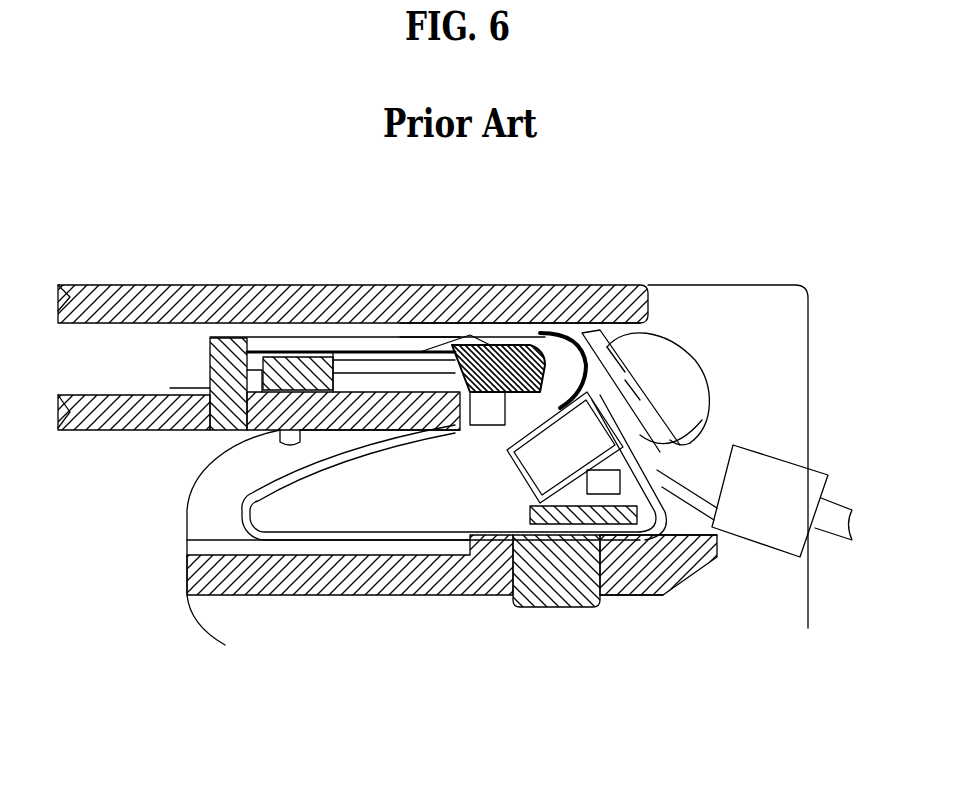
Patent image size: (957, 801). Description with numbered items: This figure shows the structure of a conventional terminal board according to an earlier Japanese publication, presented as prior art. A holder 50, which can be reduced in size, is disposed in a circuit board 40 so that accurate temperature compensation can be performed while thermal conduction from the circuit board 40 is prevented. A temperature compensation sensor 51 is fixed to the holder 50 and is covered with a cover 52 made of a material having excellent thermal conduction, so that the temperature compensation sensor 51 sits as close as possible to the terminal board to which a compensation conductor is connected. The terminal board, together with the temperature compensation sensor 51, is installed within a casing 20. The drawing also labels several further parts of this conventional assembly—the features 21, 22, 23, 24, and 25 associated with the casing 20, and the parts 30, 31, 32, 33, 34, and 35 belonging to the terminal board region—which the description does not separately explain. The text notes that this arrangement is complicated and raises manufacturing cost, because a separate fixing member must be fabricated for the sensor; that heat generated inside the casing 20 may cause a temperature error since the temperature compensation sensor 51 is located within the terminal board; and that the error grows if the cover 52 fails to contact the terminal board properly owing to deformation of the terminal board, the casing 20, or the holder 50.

The casing 20 is at (128, 262).
The Attachment hole 21 is at (672, 556).
The Groove unit 22 is at (456, 330).
The Groove unit 23 is at (350, 550).
The Stopper member 24 is at (592, 327).
The Insertion groove 25 is at (352, 433).
The Terminal 30 is at (745, 357).
The Nut member 31 is at (538, 585).
The Spring member 32 is at (597, 565).
The Washer 33 is at (698, 426).
The Screw 34 is at (700, 390).
The Terminal 35 is at (767, 538).
The circuit board 40 is at (90, 430).
The holder 50 is at (230, 338).
The temperature compensation sensor 51 is at (510, 345).
The cover 52 is at (360, 345).